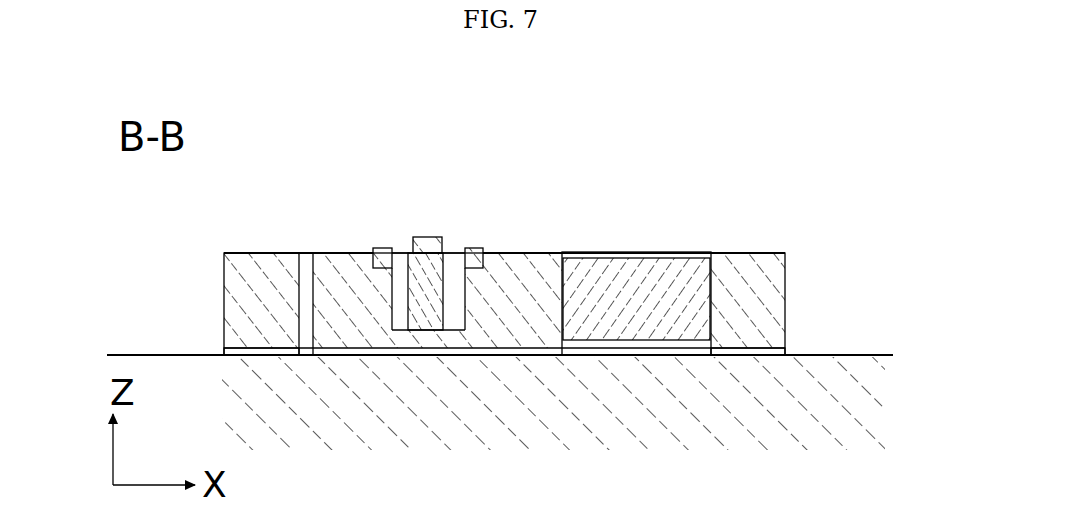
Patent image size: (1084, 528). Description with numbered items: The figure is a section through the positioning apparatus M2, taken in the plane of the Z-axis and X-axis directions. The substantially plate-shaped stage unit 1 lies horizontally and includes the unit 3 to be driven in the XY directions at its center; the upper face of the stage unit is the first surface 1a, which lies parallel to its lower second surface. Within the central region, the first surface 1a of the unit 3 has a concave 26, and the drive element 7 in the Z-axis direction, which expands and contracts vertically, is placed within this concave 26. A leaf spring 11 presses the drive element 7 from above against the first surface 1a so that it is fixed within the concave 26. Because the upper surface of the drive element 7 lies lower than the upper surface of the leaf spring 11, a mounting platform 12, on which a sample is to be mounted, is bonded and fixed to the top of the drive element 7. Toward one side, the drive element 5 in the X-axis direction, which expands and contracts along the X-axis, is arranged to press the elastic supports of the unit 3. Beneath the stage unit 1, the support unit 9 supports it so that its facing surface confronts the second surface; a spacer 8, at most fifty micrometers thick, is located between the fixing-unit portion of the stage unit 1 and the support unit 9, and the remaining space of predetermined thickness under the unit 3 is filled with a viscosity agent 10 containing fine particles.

The stage unit 1 is at (235, 236).
The first surface 1a is at (772, 250).
The unit to be driven in the XY directions 3 is at (340, 273).
The drive element in the X-axis direction 5 is at (655, 272).
The drive element in the Z-axis direction 7 is at (415, 272).
The spacer 8 is at (250, 350).
The support unit 9 is at (790, 393).
The viscosity agent 10 is at (460, 348).
The leaf spring 11 is at (377, 250).
The mounting platform 12 is at (432, 237).
The concave 26 is at (452, 268).
The positioning apparatus M2 is at (782, 206).